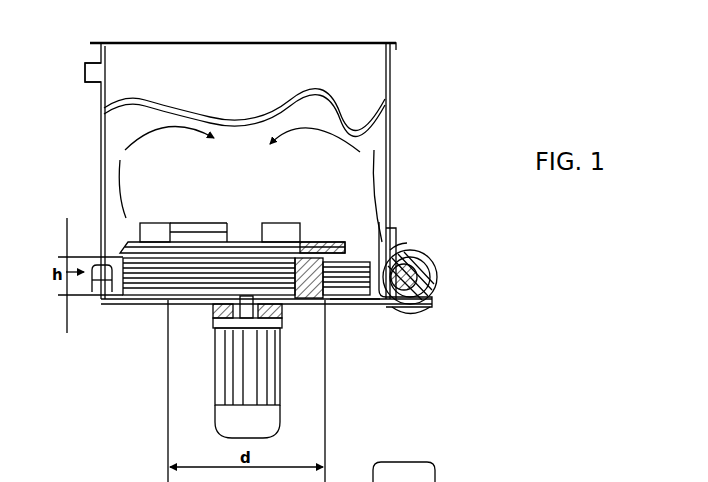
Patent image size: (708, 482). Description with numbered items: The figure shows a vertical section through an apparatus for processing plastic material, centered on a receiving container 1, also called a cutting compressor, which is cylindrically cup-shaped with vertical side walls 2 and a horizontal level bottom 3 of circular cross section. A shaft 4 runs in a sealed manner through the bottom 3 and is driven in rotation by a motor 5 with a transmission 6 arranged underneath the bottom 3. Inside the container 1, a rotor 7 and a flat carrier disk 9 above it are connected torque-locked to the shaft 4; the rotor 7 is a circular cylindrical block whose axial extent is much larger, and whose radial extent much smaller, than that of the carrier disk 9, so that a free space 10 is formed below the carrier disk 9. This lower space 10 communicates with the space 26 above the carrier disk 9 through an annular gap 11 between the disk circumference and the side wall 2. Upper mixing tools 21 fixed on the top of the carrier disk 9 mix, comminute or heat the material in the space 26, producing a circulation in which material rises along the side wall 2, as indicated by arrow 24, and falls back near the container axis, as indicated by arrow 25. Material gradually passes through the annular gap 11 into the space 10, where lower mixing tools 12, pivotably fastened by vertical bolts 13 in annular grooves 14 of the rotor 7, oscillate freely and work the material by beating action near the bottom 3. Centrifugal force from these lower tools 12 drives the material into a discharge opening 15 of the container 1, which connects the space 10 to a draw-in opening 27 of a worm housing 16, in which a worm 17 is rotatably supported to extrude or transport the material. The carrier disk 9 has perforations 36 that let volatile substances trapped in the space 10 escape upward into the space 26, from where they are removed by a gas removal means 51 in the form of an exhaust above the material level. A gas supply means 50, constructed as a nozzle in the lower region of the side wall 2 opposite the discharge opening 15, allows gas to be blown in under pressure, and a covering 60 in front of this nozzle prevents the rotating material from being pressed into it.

The receiving container 1 is at (83, 143).
The side wall 2 is at (390, 76).
The bottom 3 is at (334, 306).
The shaft 4 is at (213, 325).
The motor 5 is at (250, 390).
The transmission 6 is at (279, 346).
The rotor 7 is at (302, 306).
The carrier disk 9 is at (386, 212).
The free space 10 is at (366, 306).
The annular gap 11 is at (397, 226).
The lower mixing tools 12 is at (331, 250).
The vertical bolts 13 is at (318, 260).
The annular grooves 14 is at (193, 257).
The discharge opening 15 is at (413, 308).
The worm housing 16 is at (428, 258).
The worm 17 is at (418, 276).
The upper mixing tools 21 is at (181, 235).
The arrow 24 is at (113, 202).
The arrow 25 is at (148, 135).
The space 26 is at (262, 164).
The draw-in opening 27 is at (405, 245).
The perforations 36 is at (223, 233).
The gas supply means 50 is at (96, 293).
The gas removal means 51 is at (89, 68).
The covering 60 is at (109, 293).